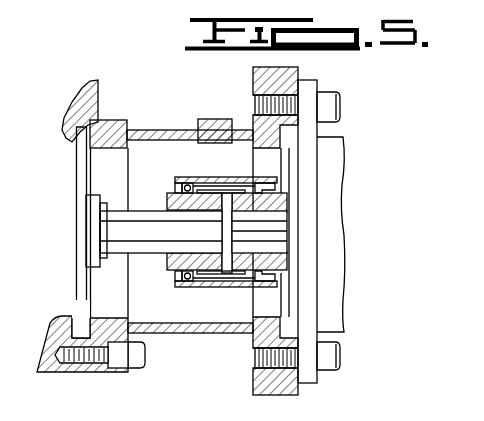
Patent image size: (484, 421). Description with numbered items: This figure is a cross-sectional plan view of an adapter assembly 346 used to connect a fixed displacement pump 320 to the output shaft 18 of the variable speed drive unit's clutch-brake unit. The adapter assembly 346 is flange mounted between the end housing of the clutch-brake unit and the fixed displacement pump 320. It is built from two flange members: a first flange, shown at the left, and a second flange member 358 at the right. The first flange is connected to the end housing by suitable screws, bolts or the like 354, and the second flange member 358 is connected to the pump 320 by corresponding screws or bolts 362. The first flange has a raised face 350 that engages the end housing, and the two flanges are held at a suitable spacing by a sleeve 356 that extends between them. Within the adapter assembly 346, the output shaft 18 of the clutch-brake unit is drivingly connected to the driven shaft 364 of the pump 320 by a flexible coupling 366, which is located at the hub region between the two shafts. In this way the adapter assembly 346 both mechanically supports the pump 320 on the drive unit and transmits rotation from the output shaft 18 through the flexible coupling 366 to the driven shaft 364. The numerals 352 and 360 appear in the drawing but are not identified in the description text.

The output shaft 18 is at (143, 218).
The fixed displacement pump 320 is at (334, 170).
The adapter assembly 346 is at (173, 129).
The raised face 350 is at (108, 80).
The lower retaining lug 352 is at (92, 337).
The screws 354 is at (145, 372).
The sleeve 356 is at (168, 336).
The flange member 358 is at (277, 396).
The flange plate 360 is at (303, 90).
The bolts 362 is at (342, 101).
The driven shaft 364 is at (276, 223).
The flexible coupling 366 is at (203, 177).